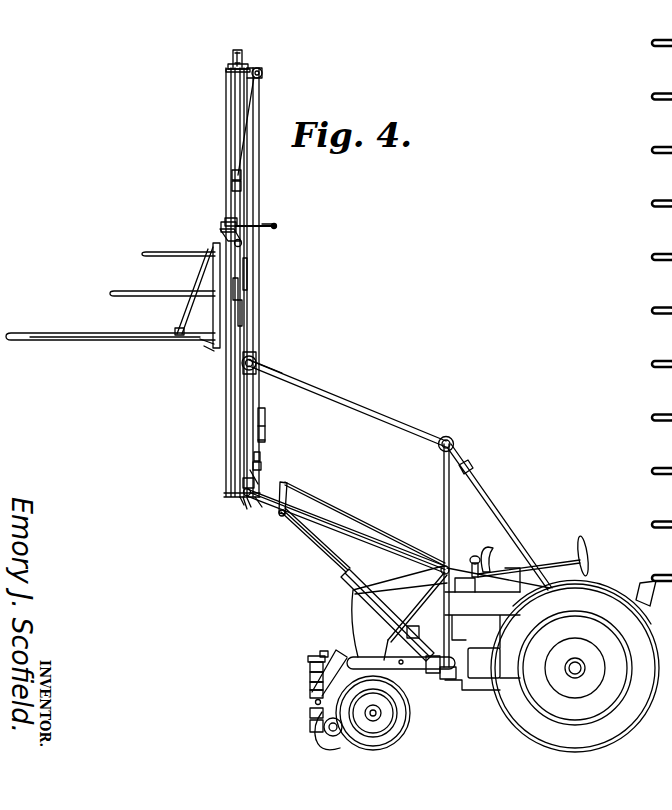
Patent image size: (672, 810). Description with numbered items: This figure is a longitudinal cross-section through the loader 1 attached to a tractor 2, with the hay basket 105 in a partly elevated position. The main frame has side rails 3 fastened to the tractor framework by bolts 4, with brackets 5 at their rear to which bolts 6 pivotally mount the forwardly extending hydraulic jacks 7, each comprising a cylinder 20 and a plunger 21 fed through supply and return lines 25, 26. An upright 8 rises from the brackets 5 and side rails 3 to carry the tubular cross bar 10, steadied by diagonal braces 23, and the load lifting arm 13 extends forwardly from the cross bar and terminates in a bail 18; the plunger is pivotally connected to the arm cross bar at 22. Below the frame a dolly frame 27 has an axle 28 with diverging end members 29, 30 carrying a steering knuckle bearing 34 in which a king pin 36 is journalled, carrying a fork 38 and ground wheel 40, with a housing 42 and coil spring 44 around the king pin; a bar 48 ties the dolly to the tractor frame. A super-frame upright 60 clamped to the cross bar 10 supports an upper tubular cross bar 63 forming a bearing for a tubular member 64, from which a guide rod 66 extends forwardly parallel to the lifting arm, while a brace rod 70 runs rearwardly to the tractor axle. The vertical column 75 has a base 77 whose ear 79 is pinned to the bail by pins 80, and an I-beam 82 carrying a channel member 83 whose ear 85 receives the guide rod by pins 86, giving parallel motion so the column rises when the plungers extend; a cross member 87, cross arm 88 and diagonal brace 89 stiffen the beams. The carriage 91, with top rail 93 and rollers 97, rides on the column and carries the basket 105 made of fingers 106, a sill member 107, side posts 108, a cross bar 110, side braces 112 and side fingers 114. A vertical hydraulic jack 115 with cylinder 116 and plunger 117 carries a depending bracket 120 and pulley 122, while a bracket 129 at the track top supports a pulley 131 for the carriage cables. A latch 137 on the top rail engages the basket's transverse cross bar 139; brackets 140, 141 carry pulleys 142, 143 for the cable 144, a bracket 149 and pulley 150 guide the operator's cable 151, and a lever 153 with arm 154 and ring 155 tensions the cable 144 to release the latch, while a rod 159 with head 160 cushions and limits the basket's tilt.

The loader 1 is at (272, 364).
The tractor 2 is at (603, 594).
The side rails 3 is at (402, 666).
The bolts 4 is at (355, 658).
The brackets 5 is at (446, 680).
The bolts 6 is at (430, 674).
The hydraulic jacks 7 is at (345, 579).
The upright 8 is at (452, 602).
The tubular cross bar 10 is at (441, 570).
The load lifting arm 13 is at (372, 541).
The bail 18 is at (265, 507).
The cylinders 20 is at (358, 589).
The plungers 21 is at (322, 552).
The pivotal connection 22 is at (283, 517).
The braces 23 is at (426, 601).
The supply line 25 is at (457, 648).
The return line 26 is at (412, 632).
The dolly frame 27 is at (309, 712).
The axle 28 is at (309, 727).
The diverging end member 29 is at (309, 700).
The diverging end member 30 is at (315, 656).
The steering knuckle bearing 34 is at (309, 671).
The king pin 36 is at (309, 663).
The fork 38 is at (325, 736).
The ground wheel 40 is at (328, 749).
The housing 42 is at (309, 683).
The coil spring 44 is at (309, 693).
The bar 48 is at (324, 651).
The upright 60 is at (444, 508).
The tubular cross bar 63 is at (448, 440).
The tubular member 64 is at (441, 449).
The guide rod 66 is at (408, 421).
The brace rod 70 is at (482, 493).
The vertical guide track or column 75 is at (232, 65).
The base 77 is at (241, 500).
The ear 79 is at (250, 508).
The pins 80 is at (244, 510).
The I-beam 82 is at (225, 407).
The channel member 83 is at (254, 352).
The ear 85 is at (255, 358).
The pins 86 is at (253, 363).
The cross member 87 is at (232, 70).
The cross arm 88 is at (245, 152).
The diagonal brace 89 is at (248, 165).
The carriage 91 is at (217, 350).
The top rail 93 is at (230, 220).
The rollers 97 is at (240, 243).
The basket 105 is at (200, 345).
The fingers or rake pieces 106 is at (80, 340).
The sill member 107 is at (206, 351).
The side posts 108 is at (197, 273).
The cross bar 110 is at (180, 330).
The side braces 112 is at (188, 297).
The side fingers 114 is at (144, 253).
The hydraulic jack 115 is at (246, 276).
The cylinder 116 is at (242, 312).
The plunger 117 is at (247, 263).
The depending bracket 120 is at (233, 176).
The sheave or pulley 122 is at (233, 186).
The bracket 129 is at (243, 52).
The sheave or pulley 131 is at (236, 48).
The latch 137 is at (221, 233).
The transverse cross bar 139 is at (224, 224).
The bracket 140 is at (258, 462).
The bracket 141 is at (255, 68).
The pulley 142 is at (258, 457).
The pulley 143 is at (263, 74).
The cable 144 is at (259, 192).
The bracket 149 is at (254, 481).
The pulley 150 is at (256, 468).
The cable 151 is at (378, 532).
The lever 153 is at (266, 441).
The arm 154 is at (266, 428).
The loop or ring 155 is at (262, 410).
The rod 159 is at (275, 223).
The head 160 is at (276, 226).